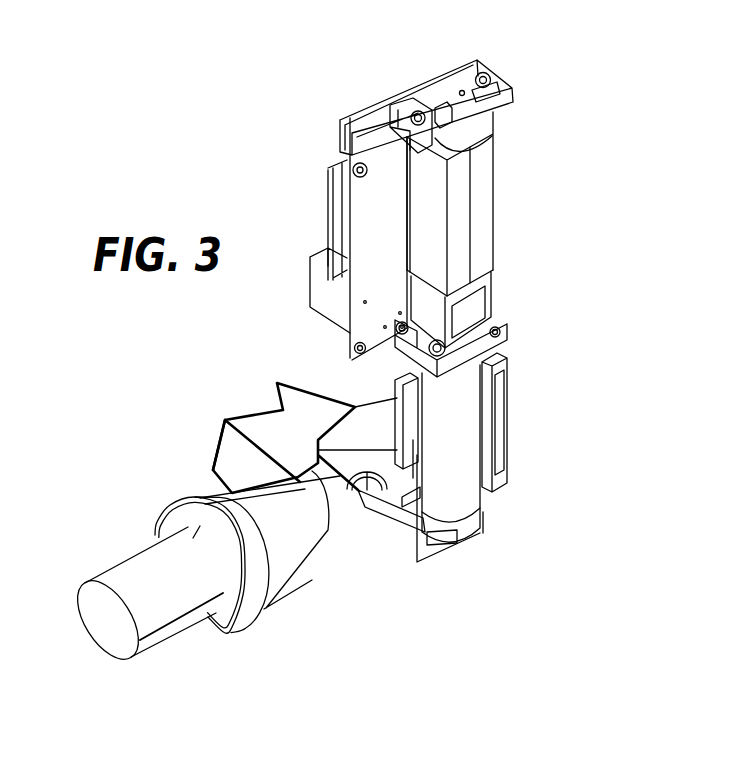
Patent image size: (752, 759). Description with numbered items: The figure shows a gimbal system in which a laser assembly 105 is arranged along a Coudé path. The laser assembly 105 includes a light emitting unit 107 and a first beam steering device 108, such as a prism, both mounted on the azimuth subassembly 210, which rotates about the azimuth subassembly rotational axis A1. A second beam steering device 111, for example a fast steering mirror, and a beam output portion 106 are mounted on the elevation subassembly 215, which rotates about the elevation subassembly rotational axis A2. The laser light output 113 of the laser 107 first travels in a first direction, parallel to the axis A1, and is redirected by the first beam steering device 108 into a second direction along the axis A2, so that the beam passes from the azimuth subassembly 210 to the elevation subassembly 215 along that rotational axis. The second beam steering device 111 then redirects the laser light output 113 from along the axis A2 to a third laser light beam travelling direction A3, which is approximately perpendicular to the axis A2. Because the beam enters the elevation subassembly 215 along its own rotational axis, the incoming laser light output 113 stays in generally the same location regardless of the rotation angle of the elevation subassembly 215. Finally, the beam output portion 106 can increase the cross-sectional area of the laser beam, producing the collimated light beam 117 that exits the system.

The laser assembly 105 is at (510, 170).
The beam output portion 106 is at (277, 557).
The light emitting unit 107 is at (477, 233).
The first beam steering device 108 is at (428, 550).
The second beam steering device 111 is at (352, 425).
The laser light output 113 is at (247, 420).
The collimate light beam 117 is at (133, 578).
The azimuth subassembly 210 is at (500, 98).
The elevation subassembly 215 is at (222, 470).
The azimuth subassembly rotational axis A1 is at (439, 13).
The elevation subassembly rotational axis A2 is at (468, 557).
The third laser light beam travelling direction A3 is at (18, 665).